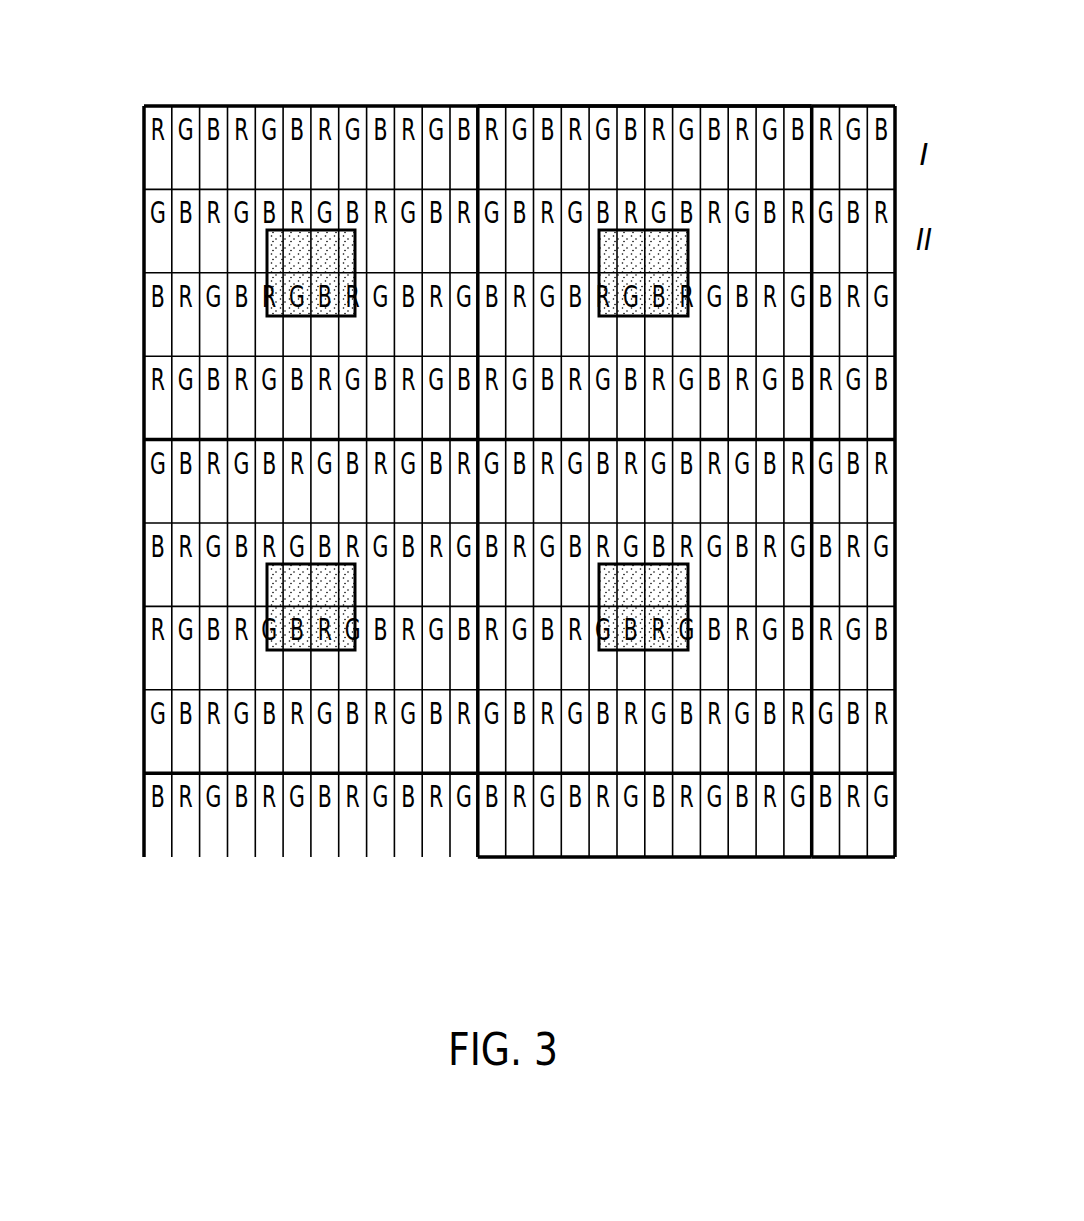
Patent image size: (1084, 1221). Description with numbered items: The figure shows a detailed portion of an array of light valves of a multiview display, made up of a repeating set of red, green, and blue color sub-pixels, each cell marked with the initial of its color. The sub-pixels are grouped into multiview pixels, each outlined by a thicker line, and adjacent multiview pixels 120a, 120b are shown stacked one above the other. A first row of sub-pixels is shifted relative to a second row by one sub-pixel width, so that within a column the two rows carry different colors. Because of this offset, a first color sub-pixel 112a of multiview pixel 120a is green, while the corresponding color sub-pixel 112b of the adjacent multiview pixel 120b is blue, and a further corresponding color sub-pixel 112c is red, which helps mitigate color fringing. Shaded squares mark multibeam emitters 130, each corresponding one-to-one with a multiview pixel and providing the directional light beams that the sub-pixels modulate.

The first color sub-pixel 112a is at (445, 115).
The corresponding color sub-pixel 112b is at (430, 515).
The corresponding color sub-pixel 112c is at (435, 837).
The multiview pixel 120a is at (478, 98).
The adjacent multiview pixel 120b is at (137, 442).
The multibeam emitter 130 is at (333, 258).